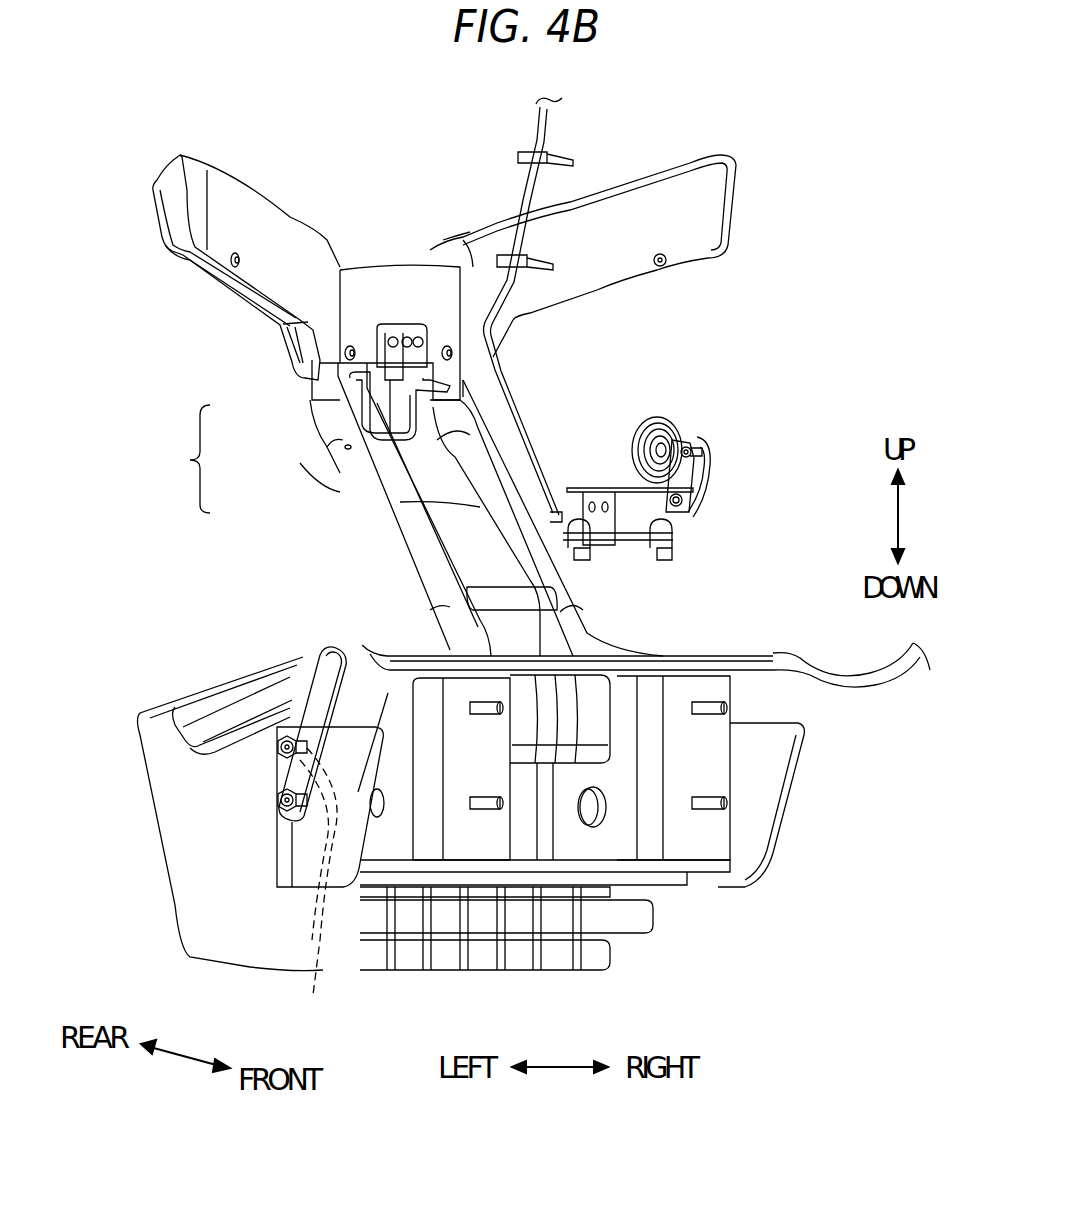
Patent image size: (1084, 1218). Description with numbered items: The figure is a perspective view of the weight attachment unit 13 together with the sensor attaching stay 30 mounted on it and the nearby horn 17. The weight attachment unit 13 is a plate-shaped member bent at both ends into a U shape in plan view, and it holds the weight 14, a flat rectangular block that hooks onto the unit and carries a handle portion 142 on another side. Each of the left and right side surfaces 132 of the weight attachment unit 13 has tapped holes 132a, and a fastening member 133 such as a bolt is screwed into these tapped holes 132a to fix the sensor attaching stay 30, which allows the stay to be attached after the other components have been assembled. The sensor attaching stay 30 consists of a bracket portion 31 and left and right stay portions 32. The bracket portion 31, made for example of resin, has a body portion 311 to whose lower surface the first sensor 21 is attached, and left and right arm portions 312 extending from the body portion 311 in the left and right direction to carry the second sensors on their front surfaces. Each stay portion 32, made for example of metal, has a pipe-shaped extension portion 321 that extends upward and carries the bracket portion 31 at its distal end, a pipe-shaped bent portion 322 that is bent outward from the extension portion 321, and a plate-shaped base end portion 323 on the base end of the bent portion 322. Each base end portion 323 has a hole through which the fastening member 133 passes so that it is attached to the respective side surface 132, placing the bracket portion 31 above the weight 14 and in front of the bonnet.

The weight attachment unit 13 is at (270, 841).
The weight 14 is at (137, 727).
The horn 17 is at (667, 417).
The first sensor 21 is at (400, 410).
The sensor attaching stay 30 is at (182, 459).
The bracket portion 31 is at (288, 347).
The stay portions 32 is at (330, 463).
The side surfaces 132 is at (307, 863).
The tapped holes 132a is at (311, 886).
The fastening member 133 is at (277, 747).
The handle portion 142 is at (237, 670).
The body portion 311 is at (390, 283).
The arm portions 312 is at (253, 197).
The extension portion 321 is at (497, 467).
The bent portion 322 is at (378, 655).
The base end portion 323 is at (290, 652).